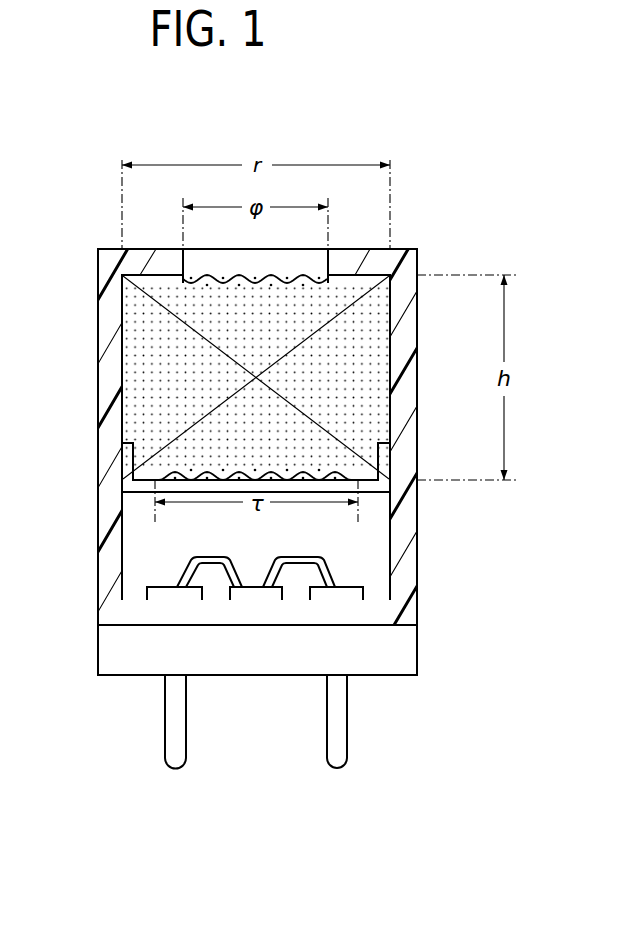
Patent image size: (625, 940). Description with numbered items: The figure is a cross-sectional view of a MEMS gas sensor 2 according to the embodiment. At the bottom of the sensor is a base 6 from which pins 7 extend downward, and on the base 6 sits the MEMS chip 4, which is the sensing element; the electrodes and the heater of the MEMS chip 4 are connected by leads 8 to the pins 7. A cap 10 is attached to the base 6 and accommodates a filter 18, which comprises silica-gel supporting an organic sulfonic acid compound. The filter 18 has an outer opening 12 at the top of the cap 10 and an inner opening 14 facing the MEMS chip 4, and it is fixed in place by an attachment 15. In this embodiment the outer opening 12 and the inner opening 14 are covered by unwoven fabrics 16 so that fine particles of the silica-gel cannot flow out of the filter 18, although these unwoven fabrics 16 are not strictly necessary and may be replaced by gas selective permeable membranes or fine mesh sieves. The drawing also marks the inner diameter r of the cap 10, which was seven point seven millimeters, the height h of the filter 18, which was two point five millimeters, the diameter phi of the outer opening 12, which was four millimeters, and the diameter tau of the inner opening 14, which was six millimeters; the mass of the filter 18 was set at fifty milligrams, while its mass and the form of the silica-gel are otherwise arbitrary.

The MEMS gas sensor 2 is at (272, 833).
The MEMS chip 4 is at (255, 598).
The base 6 is at (382, 663).
The pins 7 is at (168, 748).
The leads 8 is at (196, 557).
The cap 10 is at (408, 574).
The outer opening 12 is at (217, 260).
The inner opening 14 is at (168, 492).
The attachment 15 is at (368, 495).
The unwoven fabrics 16 is at (278, 265).
The filter 18 is at (365, 357).